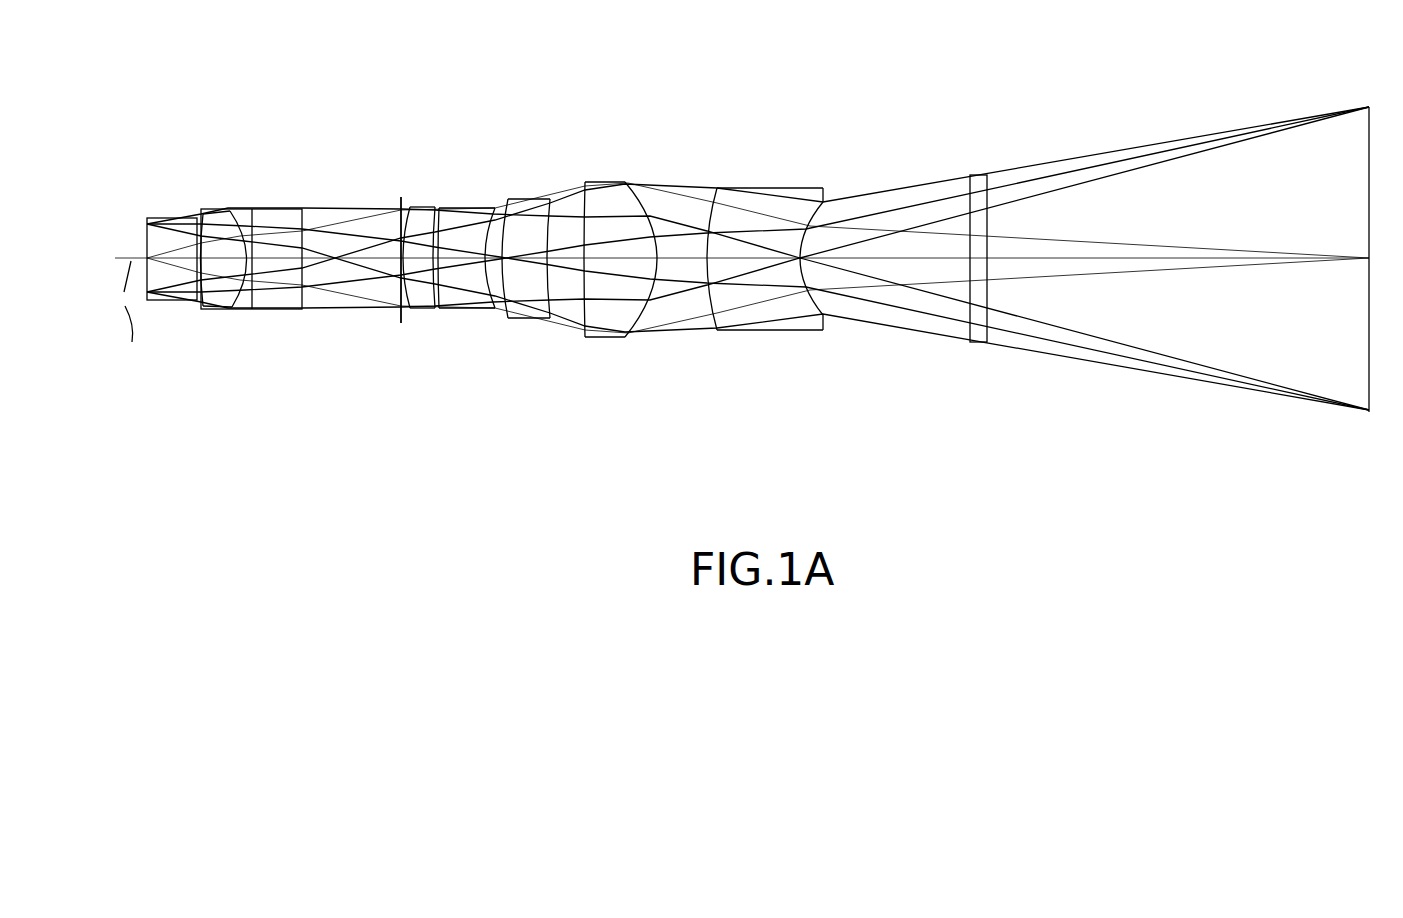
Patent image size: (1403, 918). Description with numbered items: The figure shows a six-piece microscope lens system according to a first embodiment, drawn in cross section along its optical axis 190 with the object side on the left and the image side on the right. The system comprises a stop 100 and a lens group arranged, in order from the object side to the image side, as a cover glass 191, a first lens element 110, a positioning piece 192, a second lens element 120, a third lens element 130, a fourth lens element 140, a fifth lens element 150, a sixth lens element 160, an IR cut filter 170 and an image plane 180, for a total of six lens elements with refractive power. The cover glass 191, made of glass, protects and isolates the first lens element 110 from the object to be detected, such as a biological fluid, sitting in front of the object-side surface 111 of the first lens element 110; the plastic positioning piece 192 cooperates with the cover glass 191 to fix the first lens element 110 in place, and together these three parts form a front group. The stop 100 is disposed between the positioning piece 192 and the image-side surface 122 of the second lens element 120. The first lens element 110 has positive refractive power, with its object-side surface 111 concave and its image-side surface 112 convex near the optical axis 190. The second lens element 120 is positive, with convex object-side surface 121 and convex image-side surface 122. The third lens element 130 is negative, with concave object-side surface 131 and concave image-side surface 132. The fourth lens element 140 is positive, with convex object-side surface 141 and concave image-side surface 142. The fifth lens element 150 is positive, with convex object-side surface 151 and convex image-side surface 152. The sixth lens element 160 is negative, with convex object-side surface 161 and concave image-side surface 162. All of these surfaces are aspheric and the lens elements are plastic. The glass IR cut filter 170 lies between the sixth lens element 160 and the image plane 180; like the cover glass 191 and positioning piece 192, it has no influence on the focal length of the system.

The stop 100 is at (391, 193).
The first lens element 110 is at (221, 250).
The object-side surface of the first lens element 111 is at (212, 285).
The image-side surface of the first lens element 112 is at (243, 300).
The second lens element 120 is at (408, 249).
The object-side surface of the second lens element 121 is at (404, 318).
The image-side surface of the second lens element 122 is at (436, 310).
The third lens element 130 is at (470, 266).
The object-side surface of the third lens element 131 is at (444, 305).
The image-side surface of the third lens element 132 is at (489, 300).
The fourth lens element 140 is at (524, 255).
The object-side surface of the fourth lens element 141 is at (509, 308).
The image-side surface of the fourth lens element 142 is at (547, 312).
The fifth lens element 150 is at (613, 250).
The object-side surface of the fifth lens element 151 is at (585, 340).
The image-side surface of the fifth lens element 152 is at (643, 313).
The sixth lens element 160 is at (784, 245).
The object-side surface of the sixth lens element 161 is at (712, 313).
The image-side surface of the sixth lens element 162 is at (812, 275).
The IR cut filter 170 is at (972, 164).
The image plane 180 is at (1357, 105).
The optical axis 190 is at (133, 321).
The cover glass 191 is at (157, 210).
The positioning piece 192 is at (267, 200).